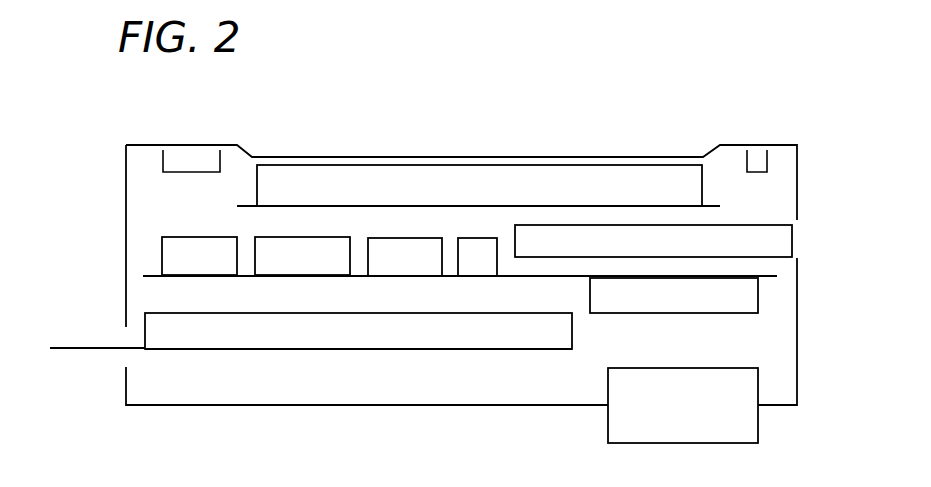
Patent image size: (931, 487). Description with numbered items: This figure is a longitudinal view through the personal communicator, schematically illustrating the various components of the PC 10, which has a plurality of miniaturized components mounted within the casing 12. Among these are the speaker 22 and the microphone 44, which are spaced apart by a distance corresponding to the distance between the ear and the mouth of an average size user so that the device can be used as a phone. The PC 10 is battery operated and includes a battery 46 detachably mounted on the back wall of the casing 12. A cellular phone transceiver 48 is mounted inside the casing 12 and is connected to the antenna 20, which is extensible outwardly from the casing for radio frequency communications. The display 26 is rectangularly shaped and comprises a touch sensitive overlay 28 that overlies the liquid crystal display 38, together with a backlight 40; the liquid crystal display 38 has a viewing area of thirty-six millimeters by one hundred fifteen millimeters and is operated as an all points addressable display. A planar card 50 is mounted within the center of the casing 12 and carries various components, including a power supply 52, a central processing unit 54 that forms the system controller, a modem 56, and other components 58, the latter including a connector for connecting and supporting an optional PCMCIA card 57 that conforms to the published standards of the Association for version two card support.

The personal communicator 10 is at (118, 131).
The casing 12 is at (126, 222).
The antenna 20 is at (88, 347).
The speaker 22 is at (208, 160).
The display 26 is at (586, 155).
The touch sensitive overlay 28 is at (338, 157).
The liquid crystal display 38 is at (357, 177).
The backlight 40 is at (248, 206).
The microphone 44 is at (757, 172).
The battery 46 is at (630, 445).
The cellular phone transceiver 48 is at (262, 350).
The planar card 50 is at (368, 313).
The power supply 52 is at (663, 313).
The central processing unit 54 is at (320, 238).
The modem 56 is at (190, 237).
The PCMCIA card 57 is at (780, 247).
The other components 58 is at (402, 238).